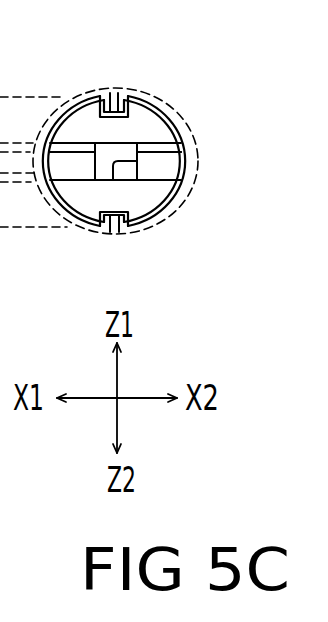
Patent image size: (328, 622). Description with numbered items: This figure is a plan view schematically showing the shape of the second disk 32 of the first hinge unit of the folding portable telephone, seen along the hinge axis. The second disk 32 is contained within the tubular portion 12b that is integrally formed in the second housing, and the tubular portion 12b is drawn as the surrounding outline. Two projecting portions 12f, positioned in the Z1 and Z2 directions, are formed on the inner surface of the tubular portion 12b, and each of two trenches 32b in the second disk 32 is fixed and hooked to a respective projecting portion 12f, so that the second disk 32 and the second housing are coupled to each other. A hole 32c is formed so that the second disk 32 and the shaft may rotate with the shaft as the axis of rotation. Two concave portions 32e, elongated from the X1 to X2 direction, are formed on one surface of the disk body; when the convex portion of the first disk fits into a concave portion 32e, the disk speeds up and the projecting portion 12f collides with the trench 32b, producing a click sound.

The tubular portion 12b is at (181, 110).
The projecting portions 12f is at (112, 96).
The second disk 32 is at (70, 106).
The trenches 32b is at (121, 98).
The hole 32c is at (115, 183).
The concave portions 32e is at (172, 161).